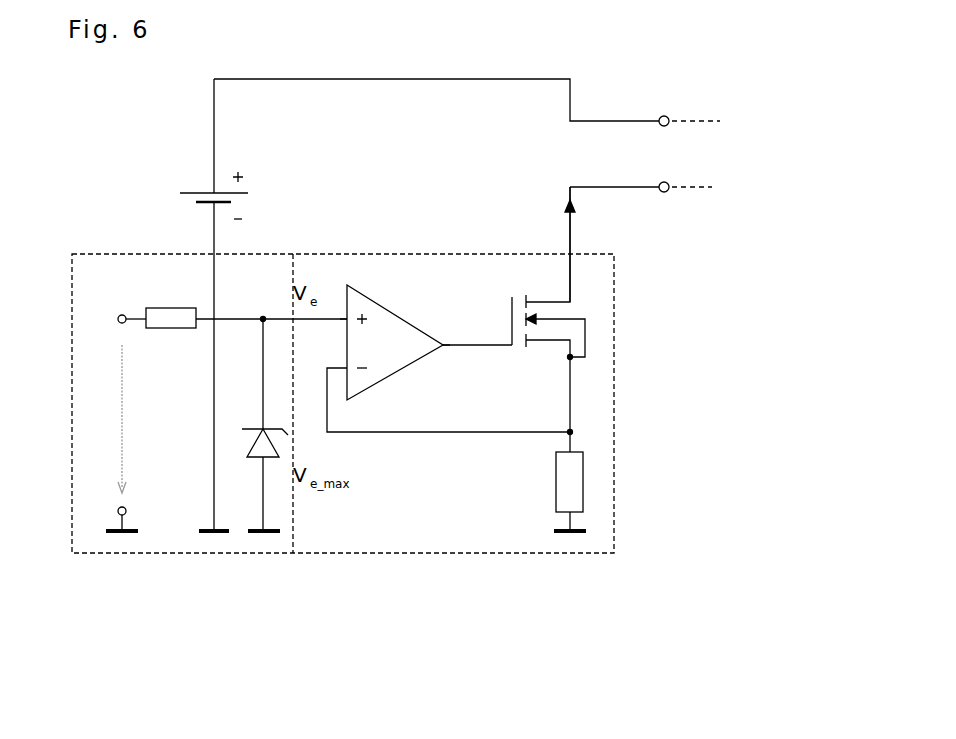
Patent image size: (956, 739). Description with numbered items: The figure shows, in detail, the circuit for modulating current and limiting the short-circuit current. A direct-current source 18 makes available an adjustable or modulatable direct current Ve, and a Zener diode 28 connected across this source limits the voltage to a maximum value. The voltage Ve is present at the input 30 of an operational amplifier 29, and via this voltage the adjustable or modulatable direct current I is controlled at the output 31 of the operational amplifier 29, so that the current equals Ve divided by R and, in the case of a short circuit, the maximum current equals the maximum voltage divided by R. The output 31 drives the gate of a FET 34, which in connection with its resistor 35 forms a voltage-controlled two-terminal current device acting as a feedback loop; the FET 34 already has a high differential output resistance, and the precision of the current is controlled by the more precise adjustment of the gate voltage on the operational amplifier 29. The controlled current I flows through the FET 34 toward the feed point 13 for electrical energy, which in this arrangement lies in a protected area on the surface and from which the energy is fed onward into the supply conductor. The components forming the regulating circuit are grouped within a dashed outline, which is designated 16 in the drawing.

The feed point 13 is at (669, 123).
The direct current I is at (572, 208).
The FET 34 is at (597, 319).
The resistor 35 is at (569, 474).
The control circuit 16 is at (597, 553).
The operational amplifier 29 is at (377, 347).
The Zener diode 28 is at (266, 457).
The direct-current source 18 is at (85, 553).
The input of the operational amplifier 30 is at (346, 287).
The output of the operational amplifier 31 is at (442, 343).